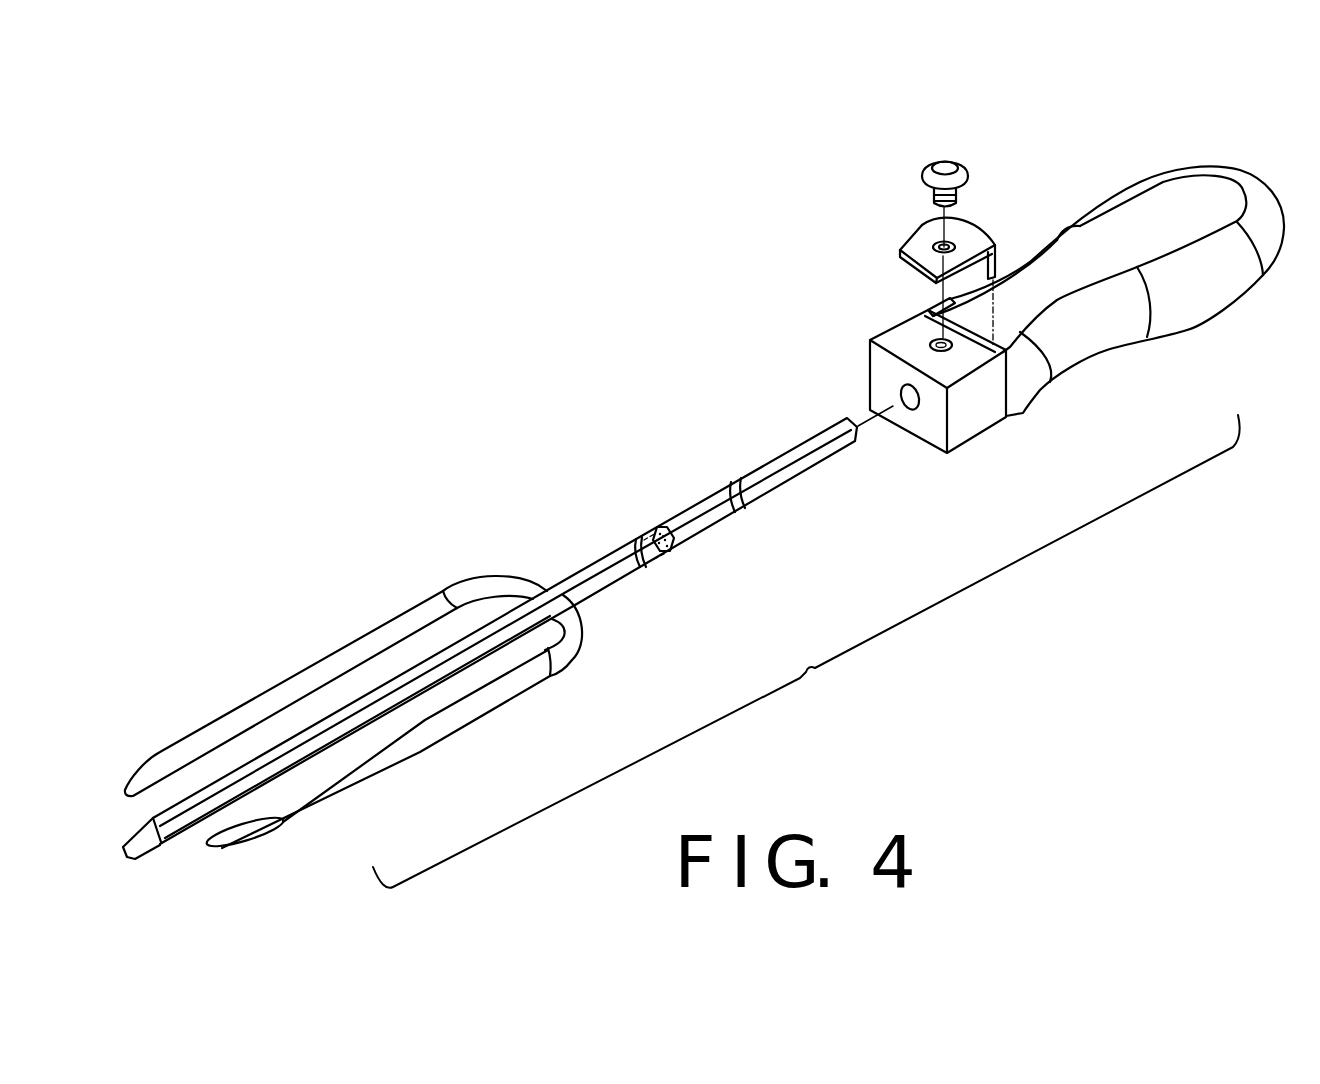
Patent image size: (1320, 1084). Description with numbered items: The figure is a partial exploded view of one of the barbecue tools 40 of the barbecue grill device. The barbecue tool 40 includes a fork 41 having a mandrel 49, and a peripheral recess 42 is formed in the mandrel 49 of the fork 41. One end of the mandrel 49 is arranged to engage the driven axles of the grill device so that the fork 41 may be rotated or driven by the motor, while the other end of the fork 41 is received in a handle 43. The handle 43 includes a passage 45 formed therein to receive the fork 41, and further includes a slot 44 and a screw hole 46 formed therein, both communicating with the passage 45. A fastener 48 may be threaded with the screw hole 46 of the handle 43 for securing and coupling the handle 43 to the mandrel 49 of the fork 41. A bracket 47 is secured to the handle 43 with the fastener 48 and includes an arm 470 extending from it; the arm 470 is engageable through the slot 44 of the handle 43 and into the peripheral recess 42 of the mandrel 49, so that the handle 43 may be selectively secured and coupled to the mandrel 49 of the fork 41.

The barbecue tool 40 is at (613, 372).
The fork 41 is at (552, 587).
The peripheral recess 42 is at (731, 481).
The handle 43 is at (1079, 214).
The slot 44 is at (996, 348).
The passage 45 is at (909, 410).
The screw hole 46 is at (933, 340).
The bracket 47 is at (967, 243).
The arm 470 is at (997, 262).
The fastener 48 is at (938, 168).
The mandrel 49 is at (697, 523).